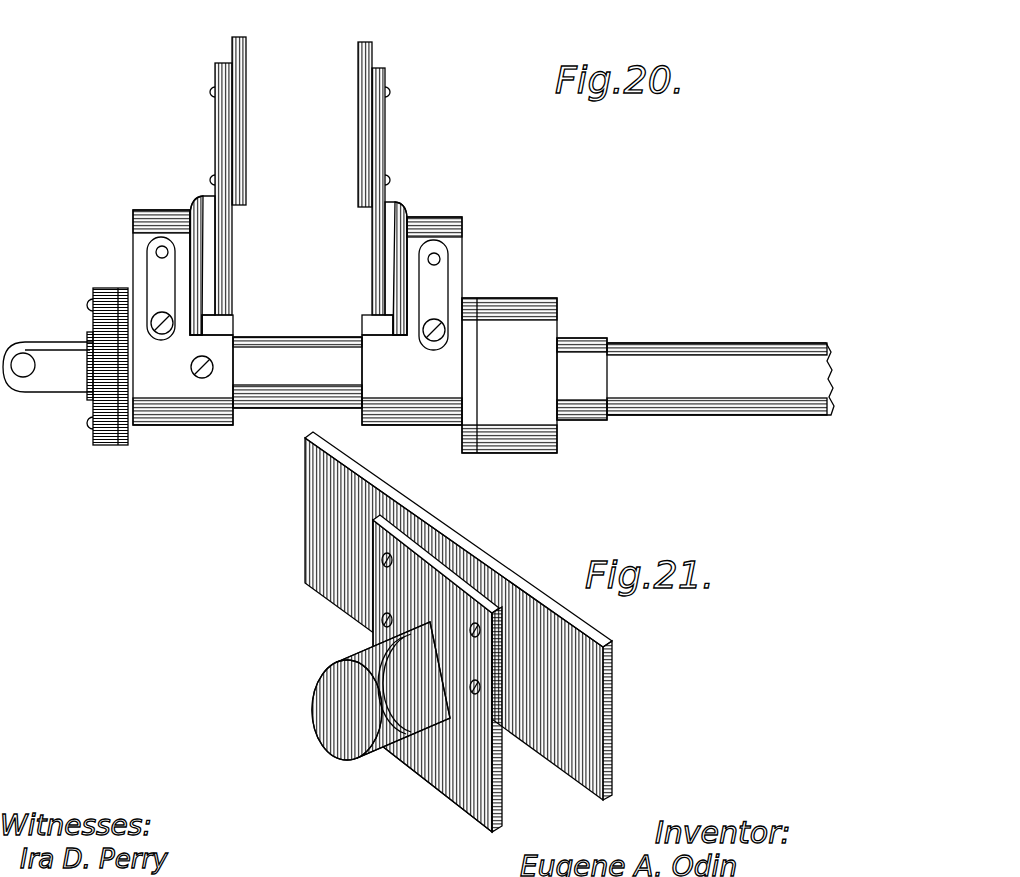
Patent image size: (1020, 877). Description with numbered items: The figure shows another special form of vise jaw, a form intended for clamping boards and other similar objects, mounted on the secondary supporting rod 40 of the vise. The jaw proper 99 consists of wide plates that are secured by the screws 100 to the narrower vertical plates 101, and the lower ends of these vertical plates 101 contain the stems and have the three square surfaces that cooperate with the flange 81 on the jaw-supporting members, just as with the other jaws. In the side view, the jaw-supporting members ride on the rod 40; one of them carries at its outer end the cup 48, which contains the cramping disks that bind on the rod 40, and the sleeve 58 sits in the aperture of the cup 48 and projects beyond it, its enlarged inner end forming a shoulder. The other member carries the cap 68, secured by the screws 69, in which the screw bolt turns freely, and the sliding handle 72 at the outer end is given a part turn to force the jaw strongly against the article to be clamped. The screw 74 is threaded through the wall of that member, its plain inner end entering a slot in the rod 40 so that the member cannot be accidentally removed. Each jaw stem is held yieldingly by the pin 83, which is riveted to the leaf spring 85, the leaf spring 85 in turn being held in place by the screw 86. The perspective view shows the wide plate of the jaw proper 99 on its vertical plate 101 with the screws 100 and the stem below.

The secondary supporting rod 40 is at (750, 346).
The cup 48 is at (531, 298).
The sleeve 58 is at (596, 338).
The cap 68 is at (107, 287).
The screws 69 is at (88, 303).
The sliding handle 72 is at (26, 356).
The screw 74 is at (203, 379).
The flange 81 is at (362, 328).
The pin 83 is at (152, 245).
The leaf spring 85 is at (192, 212).
The screw 86 is at (163, 335).
The jaw proper 99 is at (357, 50).
The screws 100 is at (214, 176).
The vertical plates 101 is at (220, 72).